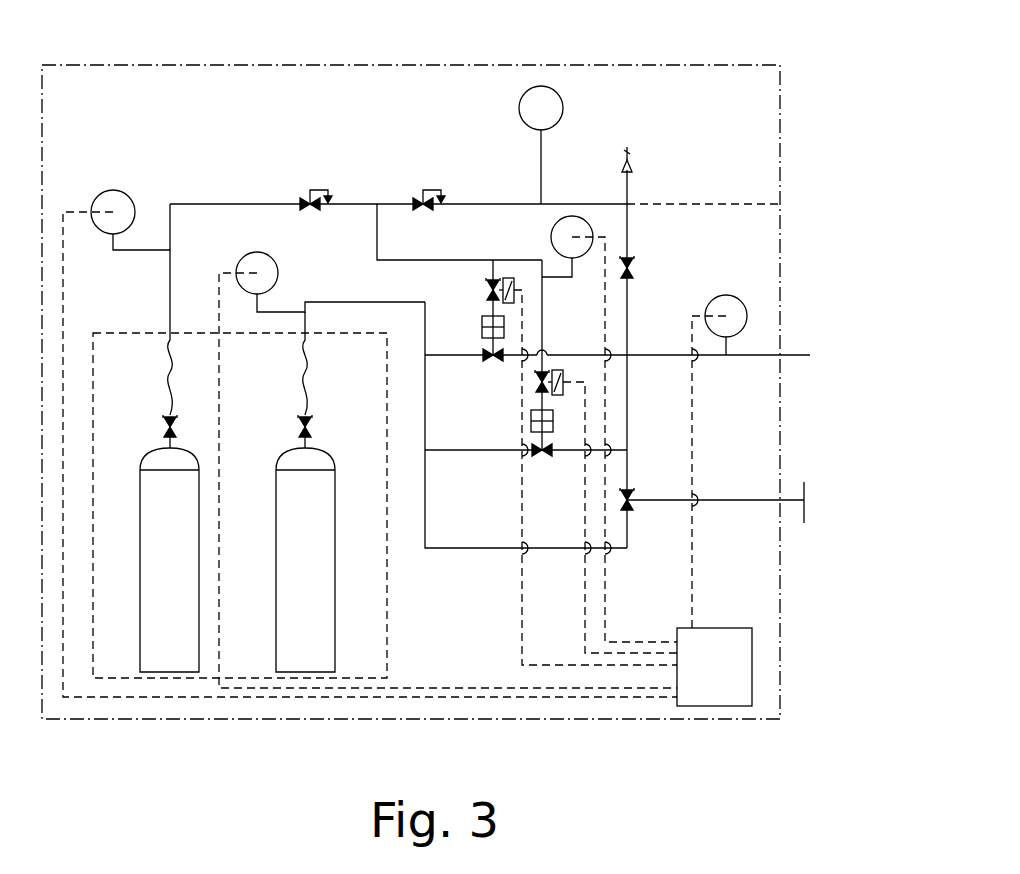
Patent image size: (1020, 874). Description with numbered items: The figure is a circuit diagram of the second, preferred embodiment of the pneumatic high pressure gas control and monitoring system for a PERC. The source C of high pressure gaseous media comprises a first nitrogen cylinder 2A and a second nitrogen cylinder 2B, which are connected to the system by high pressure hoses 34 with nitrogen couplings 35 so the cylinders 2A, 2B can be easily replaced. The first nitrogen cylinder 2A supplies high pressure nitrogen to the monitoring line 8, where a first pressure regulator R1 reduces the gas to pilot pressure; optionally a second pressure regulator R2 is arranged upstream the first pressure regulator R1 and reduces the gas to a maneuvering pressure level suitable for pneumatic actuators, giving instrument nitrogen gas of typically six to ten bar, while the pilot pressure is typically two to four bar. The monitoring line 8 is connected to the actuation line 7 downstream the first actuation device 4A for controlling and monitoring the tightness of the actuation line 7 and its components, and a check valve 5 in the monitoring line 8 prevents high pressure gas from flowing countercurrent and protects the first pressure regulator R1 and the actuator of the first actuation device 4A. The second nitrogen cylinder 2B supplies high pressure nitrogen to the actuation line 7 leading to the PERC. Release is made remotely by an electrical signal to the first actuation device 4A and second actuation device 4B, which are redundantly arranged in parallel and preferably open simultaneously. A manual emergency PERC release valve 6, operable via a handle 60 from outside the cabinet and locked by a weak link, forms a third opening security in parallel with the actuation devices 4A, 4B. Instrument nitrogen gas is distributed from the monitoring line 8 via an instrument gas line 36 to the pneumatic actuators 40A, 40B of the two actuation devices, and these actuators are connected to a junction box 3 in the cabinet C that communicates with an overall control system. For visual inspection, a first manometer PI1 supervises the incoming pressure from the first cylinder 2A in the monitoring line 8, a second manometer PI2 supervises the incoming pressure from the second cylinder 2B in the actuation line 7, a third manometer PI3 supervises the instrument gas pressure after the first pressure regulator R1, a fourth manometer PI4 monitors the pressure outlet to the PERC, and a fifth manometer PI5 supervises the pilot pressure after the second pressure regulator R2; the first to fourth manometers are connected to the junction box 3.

The source of high pressure gaseous media C is at (101, 331).
The first nitrogen cylinder 2A is at (180, 648).
The second nitrogen cylinder 2B is at (305, 648).
The junction box 3 is at (740, 658).
The first actuation device 4A is at (490, 360).
The second actuation device 4B is at (546, 455).
The check valve 5 is at (631, 268).
The manual emergency PERC release valve 6 is at (632, 500).
The actuation line 7 is at (800, 357).
The monitoring line 8 is at (490, 204).
The high pressure hoses 34 is at (174, 370).
The nitrogen couplings 35 is at (177, 432).
The instrument gas line 36 is at (400, 260).
The pneumatic actuator 40A is at (487, 289).
The pneumatic actuator 40B is at (554, 372).
The handle 60 is at (810, 483).
The first manometer PI1 is at (113, 190).
The second manometer PI2 is at (278, 274).
The third manometer PI3 is at (551, 237).
The fourth manometer PI4 is at (726, 296).
The fifth manometer PI5 is at (541, 86).
The first pressure regulator R1 is at (417, 200).
The second pressure regulator R2 is at (303, 200).